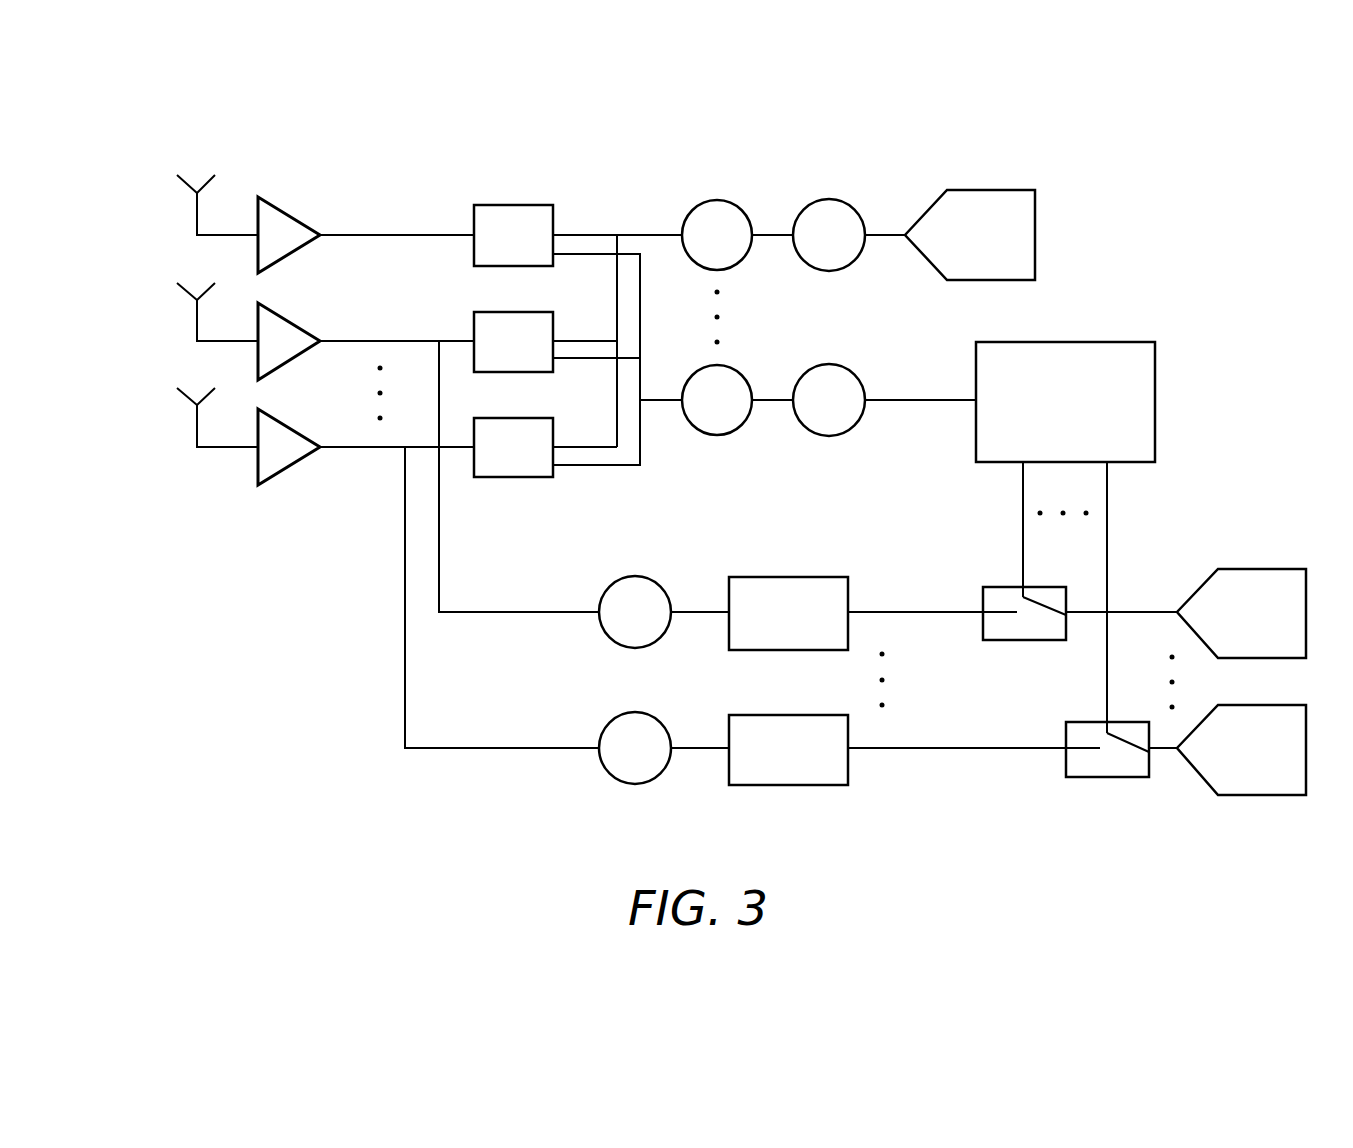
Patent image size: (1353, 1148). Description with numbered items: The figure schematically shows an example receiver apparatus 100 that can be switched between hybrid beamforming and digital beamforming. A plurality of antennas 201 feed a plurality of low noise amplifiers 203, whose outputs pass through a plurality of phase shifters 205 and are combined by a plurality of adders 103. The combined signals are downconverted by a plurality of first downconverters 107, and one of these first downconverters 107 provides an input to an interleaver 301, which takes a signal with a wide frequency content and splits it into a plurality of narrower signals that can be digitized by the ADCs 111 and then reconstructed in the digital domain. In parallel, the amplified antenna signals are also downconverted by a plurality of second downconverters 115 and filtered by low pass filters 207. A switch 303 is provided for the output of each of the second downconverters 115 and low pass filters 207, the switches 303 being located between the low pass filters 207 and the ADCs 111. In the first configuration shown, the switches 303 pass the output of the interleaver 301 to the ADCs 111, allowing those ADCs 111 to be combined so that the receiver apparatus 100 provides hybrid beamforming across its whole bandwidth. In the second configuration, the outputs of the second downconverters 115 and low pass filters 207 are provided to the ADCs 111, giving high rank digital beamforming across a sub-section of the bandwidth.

The receiver apparatus 100 is at (218, 127).
The antennas 201 is at (185, 391).
The low noise amplifiers 203 is at (292, 214).
The phase shifters 205 is at (515, 512).
The adders 103 is at (720, 470).
The first downconverters 107 is at (831, 471).
The ADCs 111 is at (1267, 830).
The interleaver 301 is at (1120, 342).
The switches 303 is at (1105, 777).
The second downconverters 115 is at (629, 577).
The low pass filters 207 is at (806, 577).